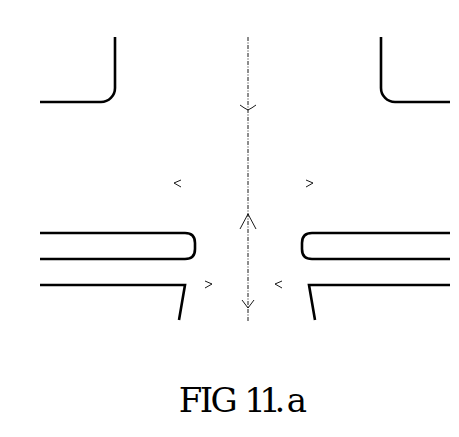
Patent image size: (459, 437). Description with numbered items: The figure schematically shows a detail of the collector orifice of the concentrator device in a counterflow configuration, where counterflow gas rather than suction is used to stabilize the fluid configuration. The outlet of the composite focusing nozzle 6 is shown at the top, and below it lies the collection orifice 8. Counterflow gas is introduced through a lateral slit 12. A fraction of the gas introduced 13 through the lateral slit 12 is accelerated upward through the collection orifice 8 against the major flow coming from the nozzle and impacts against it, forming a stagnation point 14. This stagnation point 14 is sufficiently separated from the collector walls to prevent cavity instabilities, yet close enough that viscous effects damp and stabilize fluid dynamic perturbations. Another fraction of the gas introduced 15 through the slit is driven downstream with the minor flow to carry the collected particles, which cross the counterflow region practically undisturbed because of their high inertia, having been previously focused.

The composite focusing nozzle 6 is at (378, 59).
The collection orifice 8 is at (297, 232).
The lateral slit 12 is at (51, 276).
The fraction of the gas introduced 13 is at (246, 264).
The stagnation point 14 is at (244, 178).
The another fraction of the gas introduced 15 is at (243, 311).